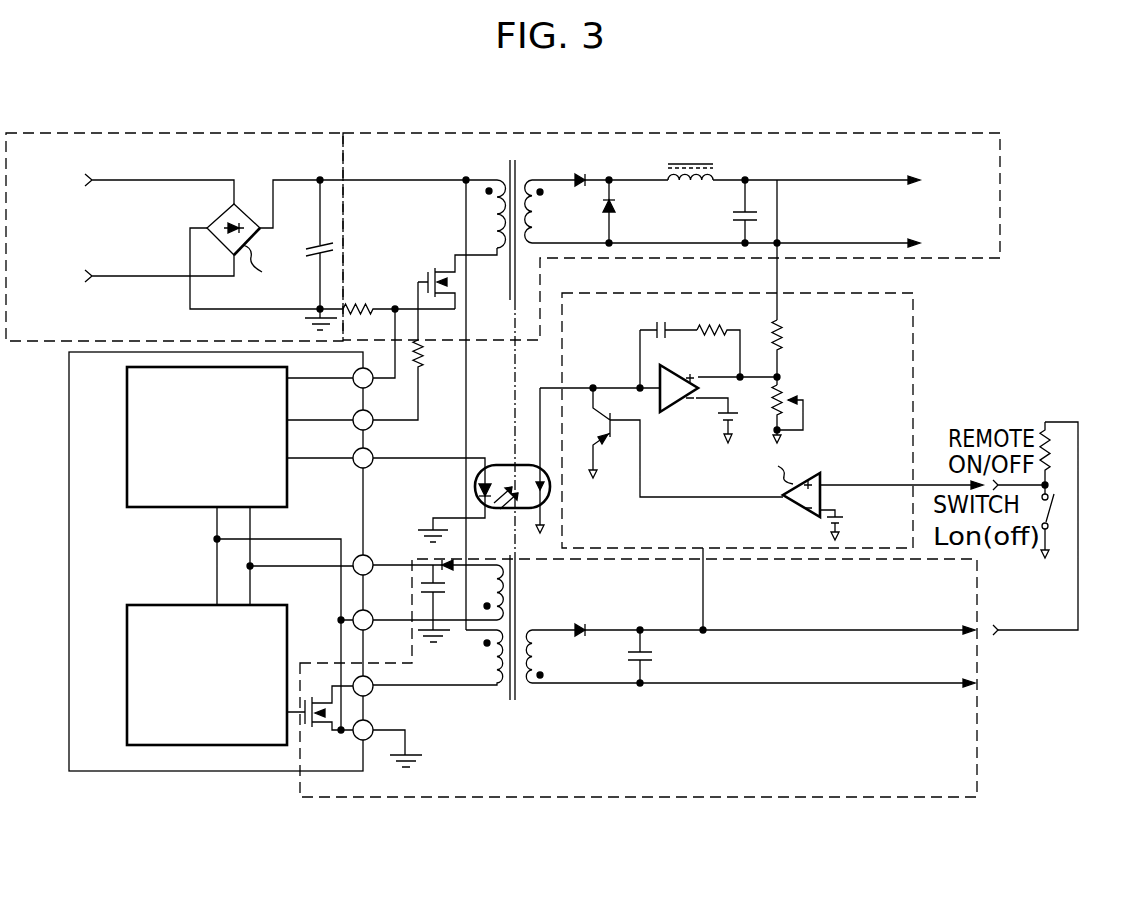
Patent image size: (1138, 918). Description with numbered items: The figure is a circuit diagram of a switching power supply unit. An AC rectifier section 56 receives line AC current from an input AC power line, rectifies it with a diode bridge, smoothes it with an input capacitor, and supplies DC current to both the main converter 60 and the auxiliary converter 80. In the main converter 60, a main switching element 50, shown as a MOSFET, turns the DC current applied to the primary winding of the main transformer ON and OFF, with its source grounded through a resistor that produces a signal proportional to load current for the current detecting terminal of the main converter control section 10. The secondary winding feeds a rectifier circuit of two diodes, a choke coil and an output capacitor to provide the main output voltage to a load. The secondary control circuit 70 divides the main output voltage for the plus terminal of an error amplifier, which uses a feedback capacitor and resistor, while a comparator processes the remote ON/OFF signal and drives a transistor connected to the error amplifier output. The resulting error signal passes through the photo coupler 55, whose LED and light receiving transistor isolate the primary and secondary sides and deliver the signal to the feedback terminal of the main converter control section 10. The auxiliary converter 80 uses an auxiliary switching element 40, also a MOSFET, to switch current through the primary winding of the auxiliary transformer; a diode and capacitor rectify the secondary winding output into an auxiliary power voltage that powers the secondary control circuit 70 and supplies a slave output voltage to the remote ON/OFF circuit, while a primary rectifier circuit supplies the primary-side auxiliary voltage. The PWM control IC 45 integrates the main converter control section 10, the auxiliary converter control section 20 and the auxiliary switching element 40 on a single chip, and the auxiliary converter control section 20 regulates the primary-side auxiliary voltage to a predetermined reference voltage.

The main converter control section 10 is at (127, 450).
The auxiliary converter control section 20 is at (127, 682).
The auxiliary switching element 40 is at (350, 763).
The PWM control IC 45 is at (245, 603).
The main switching element 50 is at (418, 280).
The photo coupler 55 is at (493, 462).
The AC rectifier section 56 is at (153, 142).
The main converter 60 is at (671, 362).
The secondary control circuit 70 is at (572, 302).
The auxiliary converter 80 is at (676, 687).